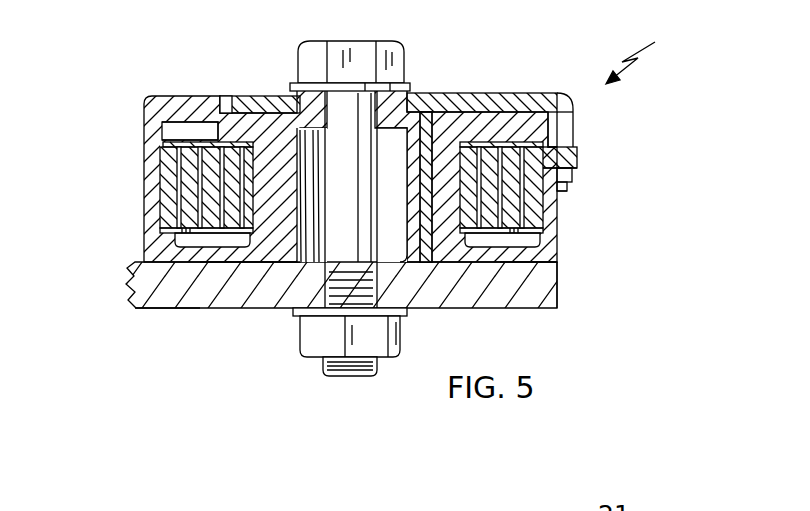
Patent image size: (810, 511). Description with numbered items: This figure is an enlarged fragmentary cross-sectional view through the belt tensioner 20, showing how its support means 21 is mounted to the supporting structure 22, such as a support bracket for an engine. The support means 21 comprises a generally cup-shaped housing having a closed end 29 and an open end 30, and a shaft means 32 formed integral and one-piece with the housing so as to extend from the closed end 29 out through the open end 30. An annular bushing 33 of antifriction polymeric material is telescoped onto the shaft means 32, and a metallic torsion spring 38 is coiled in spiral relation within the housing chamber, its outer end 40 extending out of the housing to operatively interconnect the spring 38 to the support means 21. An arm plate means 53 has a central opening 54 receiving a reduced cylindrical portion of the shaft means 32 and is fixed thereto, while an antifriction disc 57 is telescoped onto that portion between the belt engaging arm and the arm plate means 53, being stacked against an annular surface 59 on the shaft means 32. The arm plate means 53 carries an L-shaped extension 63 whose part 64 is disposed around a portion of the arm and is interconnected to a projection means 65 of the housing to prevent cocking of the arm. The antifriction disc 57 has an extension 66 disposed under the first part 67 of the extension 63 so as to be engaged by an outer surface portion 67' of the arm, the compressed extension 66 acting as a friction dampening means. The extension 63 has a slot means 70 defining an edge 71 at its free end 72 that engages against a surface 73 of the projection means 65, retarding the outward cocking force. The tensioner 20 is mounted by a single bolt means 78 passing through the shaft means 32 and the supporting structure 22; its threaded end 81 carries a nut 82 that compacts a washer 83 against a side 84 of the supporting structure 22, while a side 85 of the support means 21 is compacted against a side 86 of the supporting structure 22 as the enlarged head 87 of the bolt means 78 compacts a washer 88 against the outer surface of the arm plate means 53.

The tensioner 20 is at (651, 56).
The support means 21 is at (148, 244).
The supporting structure 22 is at (128, 292).
The closed end 29 is at (248, 258).
The open end 30 is at (147, 144).
The shaft means 32 is at (418, 182).
The annular bushing 33 is at (285, 130).
The torsion spring 38 is at (190, 185).
The outer end 40 is at (240, 165).
The arm plate means 53 is at (452, 100).
The central opening 54 is at (400, 95).
The antifriction disc 57 is at (290, 118).
The annular surface 59 is at (415, 112).
The extension 63 is at (523, 102).
The part 64 is at (567, 188).
The projection means 65 is at (578, 156).
The extension 66 is at (530, 122).
The first part 67 is at (471, 145).
The outer surface portion 67' is at (518, 50).
The slot means 70 is at (565, 138).
The edge 71 is at (577, 163).
The free end 72 is at (567, 194).
The surface 73 is at (572, 176).
The bolt means 78 is at (330, 172).
The threaded end 81 is at (340, 365).
The nut 82 is at (395, 338).
The washer 83 is at (307, 317).
The side 84 is at (167, 310).
The side 85 is at (548, 268).
The side 86 is at (545, 254).
The enlarged head 87 is at (365, 52).
The washer 88 is at (321, 52).